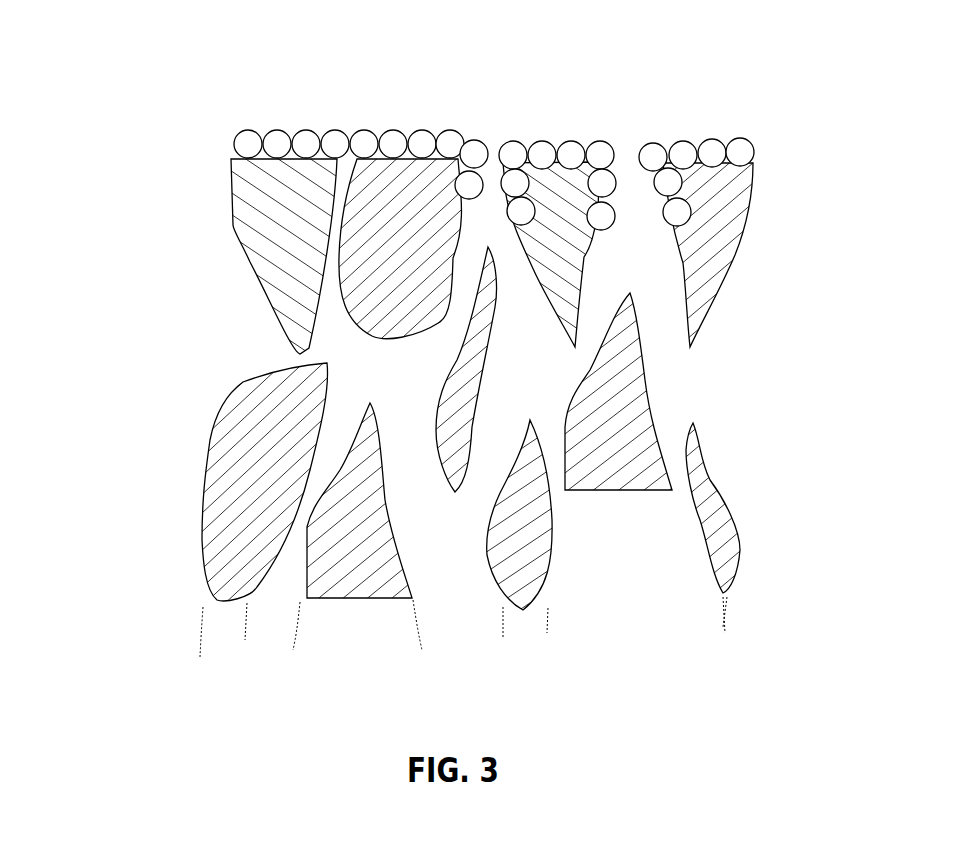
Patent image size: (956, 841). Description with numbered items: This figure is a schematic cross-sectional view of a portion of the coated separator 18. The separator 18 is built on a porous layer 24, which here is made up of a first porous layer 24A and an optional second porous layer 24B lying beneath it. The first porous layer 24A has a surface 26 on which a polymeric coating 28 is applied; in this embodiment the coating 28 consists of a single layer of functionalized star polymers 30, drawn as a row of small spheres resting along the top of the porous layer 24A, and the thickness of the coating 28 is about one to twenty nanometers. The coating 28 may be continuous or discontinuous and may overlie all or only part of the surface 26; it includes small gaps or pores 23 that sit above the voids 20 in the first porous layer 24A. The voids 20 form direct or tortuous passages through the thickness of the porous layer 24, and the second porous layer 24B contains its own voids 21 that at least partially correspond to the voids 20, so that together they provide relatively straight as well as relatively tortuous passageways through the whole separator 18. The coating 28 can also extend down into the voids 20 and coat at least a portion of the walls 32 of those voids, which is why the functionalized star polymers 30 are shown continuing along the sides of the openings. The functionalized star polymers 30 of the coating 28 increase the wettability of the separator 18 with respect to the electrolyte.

The separator 18 is at (118, 88).
The voids 20 is at (347, 163).
The voids 21 is at (267, 620).
The gaps or pores 23 is at (492, 150).
The porous layer 24 is at (153, 162).
The first porous layer 24A is at (713, 218).
The second porous layer 24B is at (225, 623).
The surface 26 is at (232, 157).
The coating layer 28 is at (459, 114).
The functionalized star polymers 30 is at (362, 142).
The walls 32 is at (673, 262).